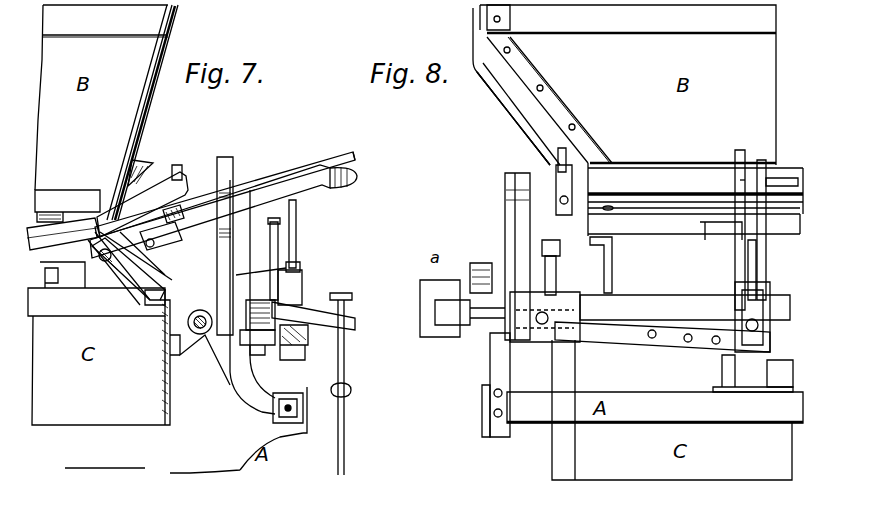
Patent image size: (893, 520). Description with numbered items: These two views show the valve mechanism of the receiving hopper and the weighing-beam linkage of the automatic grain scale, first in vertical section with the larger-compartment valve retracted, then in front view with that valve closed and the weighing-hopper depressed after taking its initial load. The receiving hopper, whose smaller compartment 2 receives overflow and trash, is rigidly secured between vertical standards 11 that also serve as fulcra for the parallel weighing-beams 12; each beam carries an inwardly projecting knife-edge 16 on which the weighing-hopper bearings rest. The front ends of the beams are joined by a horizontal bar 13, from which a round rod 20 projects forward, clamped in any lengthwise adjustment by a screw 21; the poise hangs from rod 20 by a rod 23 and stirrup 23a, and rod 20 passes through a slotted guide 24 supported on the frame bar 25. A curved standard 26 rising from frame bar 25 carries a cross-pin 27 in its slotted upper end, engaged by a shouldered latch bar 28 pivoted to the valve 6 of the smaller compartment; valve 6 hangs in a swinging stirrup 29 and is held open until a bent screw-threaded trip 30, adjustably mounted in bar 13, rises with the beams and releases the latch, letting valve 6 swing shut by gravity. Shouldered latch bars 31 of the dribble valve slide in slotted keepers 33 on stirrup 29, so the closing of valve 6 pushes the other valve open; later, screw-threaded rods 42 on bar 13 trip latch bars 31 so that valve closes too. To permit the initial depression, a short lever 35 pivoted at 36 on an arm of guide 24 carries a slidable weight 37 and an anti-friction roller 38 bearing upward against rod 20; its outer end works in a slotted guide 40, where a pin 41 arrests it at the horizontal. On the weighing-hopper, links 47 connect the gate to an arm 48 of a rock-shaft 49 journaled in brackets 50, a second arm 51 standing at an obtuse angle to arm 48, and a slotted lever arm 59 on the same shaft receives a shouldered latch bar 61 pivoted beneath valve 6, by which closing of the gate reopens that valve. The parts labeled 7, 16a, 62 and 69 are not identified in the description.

In FIG. 7, the smaller compartment 2 is at (101, 97).
In FIG. 7, the valve 6 is at (178, 172).
In FIG. 8, the valve 6 is at (655, 172).
In FIG. 7, the inclined hopper side 7 is at (150, 118).
In FIG. 8, the inclined hopper side 7 is at (624, 85).
In FIG. 7, the vertical posts or standards 11 is at (52, 212).
In FIG. 8, the vertical posts or standards 11 is at (512, 227).
In FIG. 7, the weighing-beams or levers 12 is at (84, 278).
In FIG. 8, the weighing-beams or levers 12 is at (480, 264).
In FIG. 7, the horizontal bar 13 is at (298, 290).
In FIG. 8, the horizontal bar 13 is at (622, 300).
In FIG. 8, the knife-edge 16 is at (465, 272).
In FIG. 7, the arm 16a is at (107, 214).
In FIG. 7, the forward extension rod 20 is at (352, 326).
In FIG. 8, the forward extension rod 20 is at (766, 324).
In FIG. 7, the screw 21 is at (257, 349).
In FIG. 8, the screw 21 is at (770, 286).
In FIG. 7, the rod 23 is at (346, 434).
In FIG. 7, the stirrup 23a is at (350, 368).
In FIG. 7, the slotted guide 24 is at (342, 284).
In FIG. 8, the slotted guide 24 is at (753, 373).
In FIG. 7, the frame bar 25 is at (290, 424).
In FIG. 8, the frame bar 25 is at (655, 410).
In FIG. 7, the curved standard 26 is at (243, 398).
In FIG. 8, the curved standard 26 is at (738, 165).
In FIG. 7, the cross-pin 27 is at (182, 240).
In FIG. 7, the latch bar 28 is at (296, 206).
In FIG. 8, the latch bar 28 is at (732, 183).
In FIG. 7, the swinging pivoted stirrup 29 is at (142, 162).
In FIG. 8, the swinging pivoted stirrup 29 is at (520, 130).
In FIG. 7, the trip device 30 is at (228, 256).
In FIG. 8, the trip device 30 is at (700, 226).
In FIG. 7, the latch bars 31 is at (355, 156).
In FIG. 8, the latch bars 31 is at (566, 158).
In FIG. 7, the slotted keepers 33 is at (184, 213).
In FIG. 8, the slotted keepers 33 is at (559, 200).
In FIG. 7, the short lever 35 is at (305, 345).
In FIG. 8, the short lever 35 is at (640, 338).
In FIG. 8, the pivot 36 is at (690, 345).
In FIG. 8, the slidable weight 37 is at (545, 343).
In FIG. 8, the anti-friction roller 38 is at (780, 372).
In FIG. 8, the slotted guide 40 is at (492, 336).
In FIG. 8, the pin 41 is at (494, 352).
In FIG. 7, the screw-threaded rods 42 is at (234, 276).
In FIG. 8, the screw-threaded rods 42 is at (612, 268).
In FIG. 7, the links 47 is at (132, 278).
In FIG. 8, the links 47 is at (560, 250).
In FIG. 7, the arm 48 is at (140, 284).
In FIG. 8, the arm 48 is at (556, 277).
In FIG. 7, the rock-shaft 49 is at (190, 328).
In FIG. 7, the brackets 50 is at (165, 320).
In FIG. 7, the arm 51 is at (168, 361).
In FIG. 7, the slotted lever arm 59 is at (272, 182).
In FIG. 8, the slotted lever arm 59 is at (780, 178).
In FIG. 7, the shouldered latch bar 61 is at (357, 178).
In FIG. 8, the shouldered latch bar 61 is at (762, 170).
In FIG. 7, the rod 62 is at (296, 245).
In FIG. 8, the rod 62 is at (760, 245).
In FIG. 7, the rod 69 is at (279, 226).